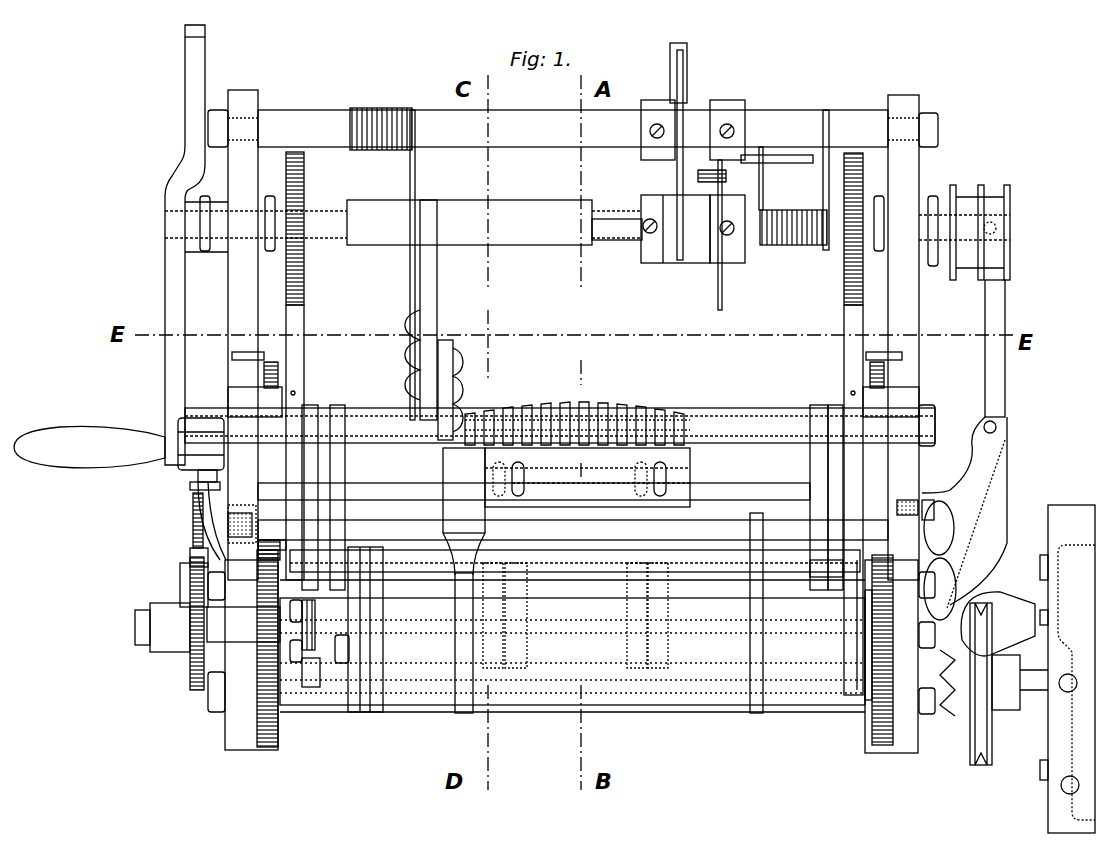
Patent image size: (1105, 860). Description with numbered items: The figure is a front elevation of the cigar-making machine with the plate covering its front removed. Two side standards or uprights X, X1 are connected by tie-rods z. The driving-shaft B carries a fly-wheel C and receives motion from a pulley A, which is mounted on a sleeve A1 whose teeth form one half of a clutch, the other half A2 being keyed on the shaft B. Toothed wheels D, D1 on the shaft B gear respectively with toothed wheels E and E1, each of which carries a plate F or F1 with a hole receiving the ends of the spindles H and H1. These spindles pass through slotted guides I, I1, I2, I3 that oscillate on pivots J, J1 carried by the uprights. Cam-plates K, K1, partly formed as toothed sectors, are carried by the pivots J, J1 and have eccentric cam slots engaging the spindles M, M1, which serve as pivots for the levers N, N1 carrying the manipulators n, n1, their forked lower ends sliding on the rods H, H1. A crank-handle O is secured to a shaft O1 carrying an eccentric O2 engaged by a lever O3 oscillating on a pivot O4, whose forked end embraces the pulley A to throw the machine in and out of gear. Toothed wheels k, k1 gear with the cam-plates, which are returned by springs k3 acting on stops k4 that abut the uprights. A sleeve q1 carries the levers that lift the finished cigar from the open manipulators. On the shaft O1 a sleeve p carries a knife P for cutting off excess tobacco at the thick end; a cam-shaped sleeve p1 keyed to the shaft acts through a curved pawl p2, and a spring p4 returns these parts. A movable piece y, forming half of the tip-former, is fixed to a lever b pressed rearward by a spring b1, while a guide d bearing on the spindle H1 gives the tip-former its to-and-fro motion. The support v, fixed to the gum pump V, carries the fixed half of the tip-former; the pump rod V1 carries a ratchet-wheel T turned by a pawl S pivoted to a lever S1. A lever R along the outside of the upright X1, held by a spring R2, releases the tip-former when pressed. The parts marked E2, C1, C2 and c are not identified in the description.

The crank-handle O is at (196, 245).
The shaft O1 is at (318, 228).
The eccentric O2 is at (964, 232).
The lever O3 is at (1005, 400).
The pivot O4 is at (996, 427).
The side standard X is at (891, 424).
The side standard X1 is at (253, 420).
The tie-rod z is at (573, 420).
The toothed wheel k is at (304, 180).
The toothed wheel k1 is at (863, 178).
The spring k3 is at (584, 375).
The stop k4 is at (567, 345).
The cam-plate K is at (294, 442).
The cam-plate K1 is at (853, 500).
The lever b is at (430, 312).
The spring b1 is at (416, 172).
The guide d is at (408, 355).
The movable piece y is at (450, 390).
The knife P is at (693, 151).
The sleeve p is at (675, 229).
The cam-shaped sleeve p1 is at (727, 235).
The curved pawl p2 is at (715, 234).
The spring p4 is at (785, 180).
The pivot J is at (560, 425).
The pivot J1 is at (774, 431).
The sleeve q1 is at (721, 431).
The guide I is at (819, 497).
The guide I1 is at (309, 497).
The guide I2 is at (335, 497).
The guide I3 is at (835, 497).
The manipulator n is at (587, 477).
The manipulator n1 is at (577, 412).
The support v is at (464, 580).
The spindle M is at (573, 530).
The spindle M1 is at (534, 490).
The spindle H is at (572, 646).
The spindle H1 is at (575, 559).
The lever N is at (576, 615).
The lever N1 is at (575, 615).
The pump V is at (555, 613).
The pump rod V1 is at (243, 624).
The plate F is at (295, 530).
The plate F1 is at (841, 608).
The toothed wheel E is at (889, 650).
The toothed wheel E1 is at (254, 539).
The worm gear E2 is at (253, 648).
The clutch C1 is at (860, 635).
The clutch C2 is at (900, 526).
The lever R is at (119, 454).
The spring R2 is at (199, 521).
The pawl S is at (190, 555).
The lever S1 is at (180, 590).
The ratchet-wheel T is at (190, 672).
The driving-shaft B is at (621, 642).
The toothed wheel D is at (878, 762).
The toothed wheel D1 is at (267, 759).
The driving-pulley A is at (1009, 684).
The sleeve A1 is at (928, 643).
The clutch half A2 is at (954, 683).
The holes c is at (1074, 678).
The fly-wheel C is at (1067, 669).